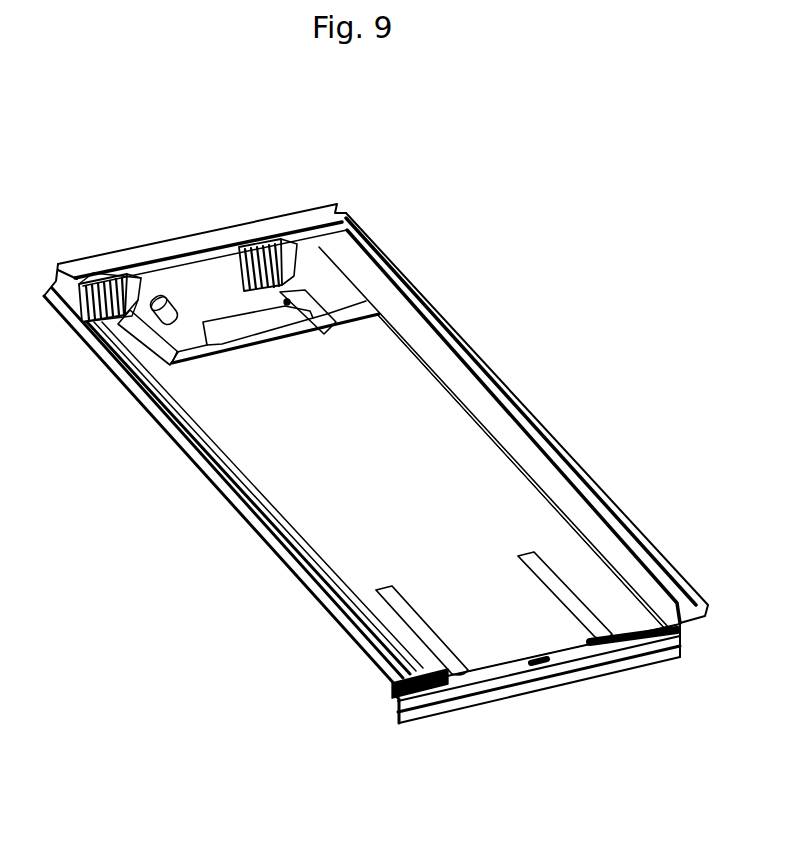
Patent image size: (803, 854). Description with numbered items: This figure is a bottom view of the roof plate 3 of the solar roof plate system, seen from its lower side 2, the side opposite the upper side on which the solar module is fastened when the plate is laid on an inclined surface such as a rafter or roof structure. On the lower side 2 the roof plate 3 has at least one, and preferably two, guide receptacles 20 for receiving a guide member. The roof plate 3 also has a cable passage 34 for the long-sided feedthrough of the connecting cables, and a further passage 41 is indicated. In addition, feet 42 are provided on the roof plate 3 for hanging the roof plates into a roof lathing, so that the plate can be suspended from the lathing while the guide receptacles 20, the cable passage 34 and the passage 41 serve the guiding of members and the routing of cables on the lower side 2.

The lower side 2 is at (460, 477).
The roof plate 3 is at (585, 230).
The guide receptacle 20 is at (439, 670).
The cable passage 34 is at (196, 242).
The passage 41 is at (289, 303).
The foot 42 is at (127, 281).